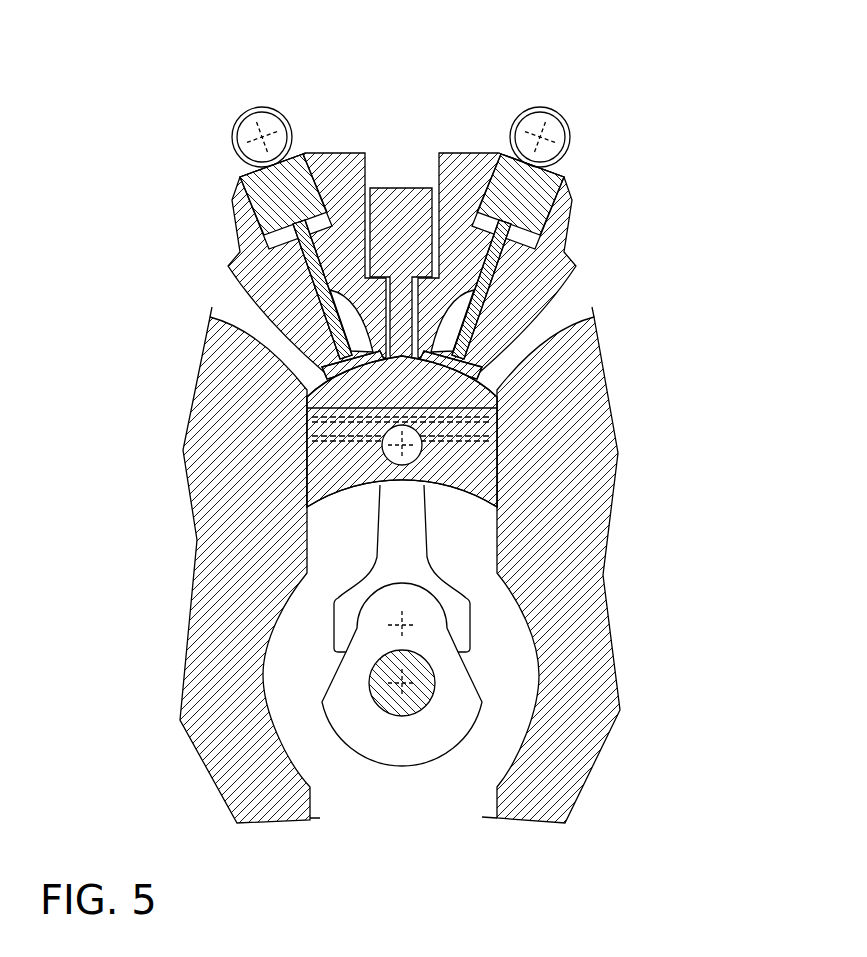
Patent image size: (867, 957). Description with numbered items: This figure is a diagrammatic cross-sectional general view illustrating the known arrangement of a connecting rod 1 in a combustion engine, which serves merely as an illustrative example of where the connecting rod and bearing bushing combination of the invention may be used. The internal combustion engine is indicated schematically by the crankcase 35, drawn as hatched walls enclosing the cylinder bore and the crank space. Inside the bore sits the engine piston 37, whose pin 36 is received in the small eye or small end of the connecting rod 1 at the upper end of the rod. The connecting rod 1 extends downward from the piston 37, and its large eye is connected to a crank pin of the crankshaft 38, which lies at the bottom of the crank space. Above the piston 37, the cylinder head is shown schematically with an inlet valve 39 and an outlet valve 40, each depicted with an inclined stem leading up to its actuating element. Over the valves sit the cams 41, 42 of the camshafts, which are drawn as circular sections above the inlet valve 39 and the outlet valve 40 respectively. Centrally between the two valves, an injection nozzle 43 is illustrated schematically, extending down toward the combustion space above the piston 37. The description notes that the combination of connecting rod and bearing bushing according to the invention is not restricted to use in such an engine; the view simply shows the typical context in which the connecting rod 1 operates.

The connecting rod 1 is at (415, 570).
The crankcase 35 is at (218, 388).
The pin 36 is at (410, 452).
The engine piston 37 is at (475, 408).
The crankshaft 38 is at (450, 690).
The inlet valve 39 is at (327, 307).
The outlet valve 40 is at (480, 295).
The cam 41 is at (245, 137).
The cam 42 is at (555, 135).
The injection nozzle 43 is at (402, 196).